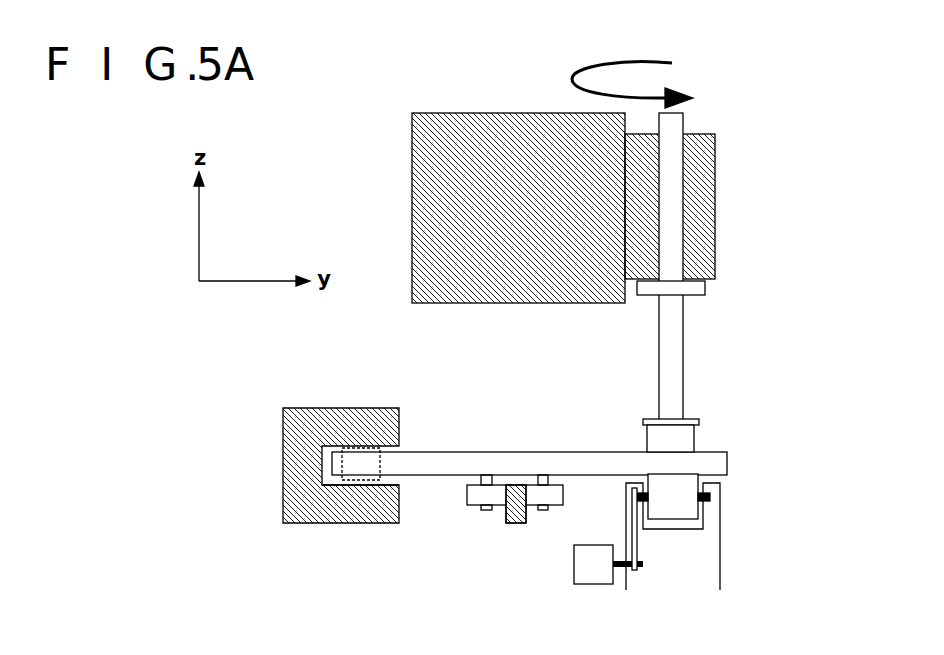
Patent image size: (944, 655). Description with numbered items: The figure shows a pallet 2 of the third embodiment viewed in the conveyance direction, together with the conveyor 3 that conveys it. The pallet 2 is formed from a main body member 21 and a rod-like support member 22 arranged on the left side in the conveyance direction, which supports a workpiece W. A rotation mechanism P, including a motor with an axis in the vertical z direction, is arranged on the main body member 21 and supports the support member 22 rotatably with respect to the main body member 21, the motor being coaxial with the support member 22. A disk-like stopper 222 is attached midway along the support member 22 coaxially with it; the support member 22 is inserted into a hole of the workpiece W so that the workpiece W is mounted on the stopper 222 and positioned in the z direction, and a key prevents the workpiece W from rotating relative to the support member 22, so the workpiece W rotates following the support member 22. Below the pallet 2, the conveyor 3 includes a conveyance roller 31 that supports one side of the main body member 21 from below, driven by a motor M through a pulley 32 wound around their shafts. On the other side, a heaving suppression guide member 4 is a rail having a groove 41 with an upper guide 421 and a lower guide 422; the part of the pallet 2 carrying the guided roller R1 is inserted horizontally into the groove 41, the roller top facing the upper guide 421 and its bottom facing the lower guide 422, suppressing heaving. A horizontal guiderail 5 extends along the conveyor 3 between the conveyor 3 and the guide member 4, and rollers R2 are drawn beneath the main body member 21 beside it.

The workpiece W is at (443, 113).
The pallet 2 is at (558, 408).
The main body member 21 is at (595, 452).
The support member 22 is at (683, 351).
The stopper 222 is at (705, 290).
The rotation mechanism P is at (694, 442).
The conveyor 3 is at (699, 557).
The conveyance roller 31 is at (675, 520).
The pulley 32 is at (634, 572).
The motor M is at (595, 584).
The heaving suppression guide member 4 is at (367, 460).
The groove 41 is at (395, 480).
The upper guide 421 is at (370, 447).
The lower guide 422 is at (341, 485).
The guided roller R1 is at (381, 465).
The second magnets R2 is at (470, 507).
The horizontal guiderail 5 is at (508, 523).